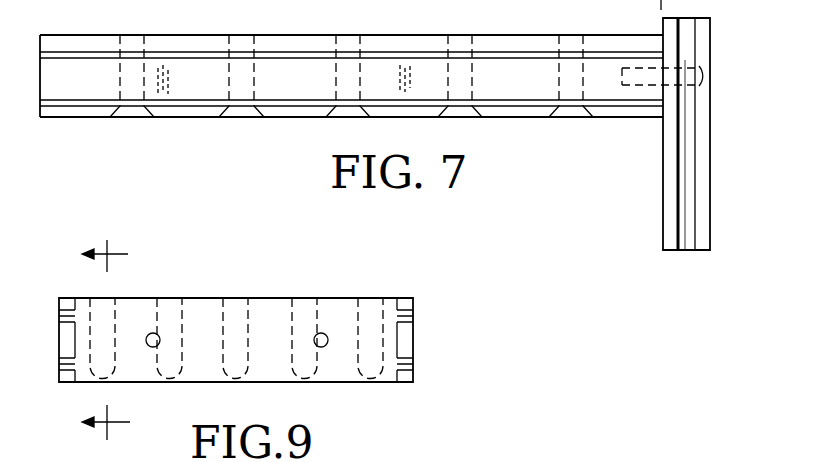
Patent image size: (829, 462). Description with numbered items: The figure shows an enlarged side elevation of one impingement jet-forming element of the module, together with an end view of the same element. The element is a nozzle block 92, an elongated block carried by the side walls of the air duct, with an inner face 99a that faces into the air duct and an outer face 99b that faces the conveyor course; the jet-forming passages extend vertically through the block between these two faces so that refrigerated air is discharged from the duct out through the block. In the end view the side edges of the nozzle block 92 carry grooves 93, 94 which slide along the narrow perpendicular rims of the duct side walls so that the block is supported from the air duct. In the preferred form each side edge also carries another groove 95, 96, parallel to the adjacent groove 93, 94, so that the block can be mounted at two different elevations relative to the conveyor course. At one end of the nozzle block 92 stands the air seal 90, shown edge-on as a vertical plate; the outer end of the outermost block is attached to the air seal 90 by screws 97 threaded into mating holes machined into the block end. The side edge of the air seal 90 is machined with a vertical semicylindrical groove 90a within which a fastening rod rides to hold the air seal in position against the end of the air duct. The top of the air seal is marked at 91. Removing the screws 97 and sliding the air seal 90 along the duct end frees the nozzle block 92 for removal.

In FIG. 7, the air seal 90 is at (710, 38).
In FIG. 7, the vertical semicylindrical groove 90a is at (692, 190).
In FIG. 7, the post top 91 is at (651, 8).
In FIG. 7, the nozzle block 92 is at (318, 48).
In FIG. 9, the nozzle block 92 is at (305, 305).
In FIG. 7, the groove 93 is at (85, 52).
In FIG. 9, the groove 93 is at (70, 312).
In FIG. 9, the groove 94 is at (413, 302).
In FIG. 7, the groove 95 is at (78, 106).
In FIG. 9, the groove 95 is at (66, 382).
In FIG. 9, the groove 96 is at (413, 385).
In FIG. 7, the screw 97 is at (645, 87).
In FIG. 7, the inner face 99a is at (190, 118).
In FIG. 7, the outer face 99b is at (175, 37).